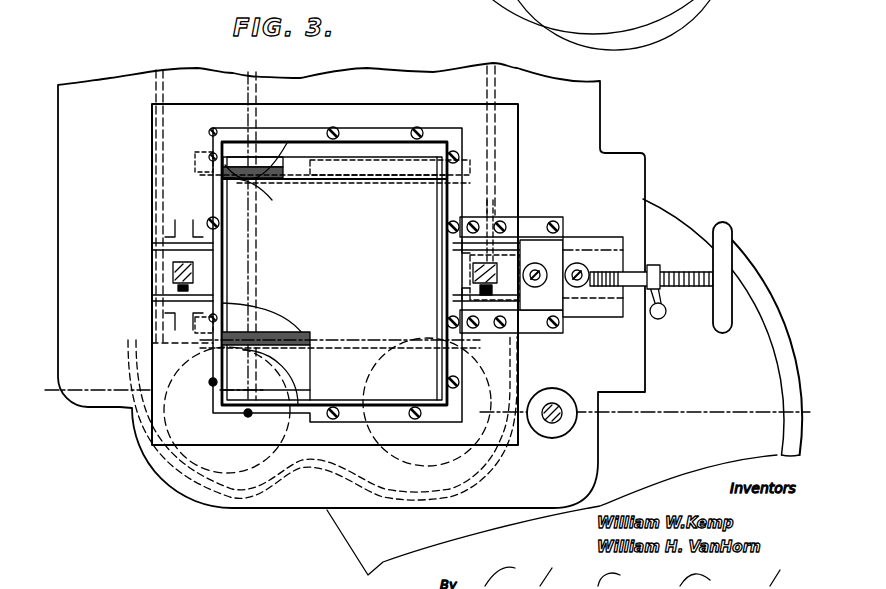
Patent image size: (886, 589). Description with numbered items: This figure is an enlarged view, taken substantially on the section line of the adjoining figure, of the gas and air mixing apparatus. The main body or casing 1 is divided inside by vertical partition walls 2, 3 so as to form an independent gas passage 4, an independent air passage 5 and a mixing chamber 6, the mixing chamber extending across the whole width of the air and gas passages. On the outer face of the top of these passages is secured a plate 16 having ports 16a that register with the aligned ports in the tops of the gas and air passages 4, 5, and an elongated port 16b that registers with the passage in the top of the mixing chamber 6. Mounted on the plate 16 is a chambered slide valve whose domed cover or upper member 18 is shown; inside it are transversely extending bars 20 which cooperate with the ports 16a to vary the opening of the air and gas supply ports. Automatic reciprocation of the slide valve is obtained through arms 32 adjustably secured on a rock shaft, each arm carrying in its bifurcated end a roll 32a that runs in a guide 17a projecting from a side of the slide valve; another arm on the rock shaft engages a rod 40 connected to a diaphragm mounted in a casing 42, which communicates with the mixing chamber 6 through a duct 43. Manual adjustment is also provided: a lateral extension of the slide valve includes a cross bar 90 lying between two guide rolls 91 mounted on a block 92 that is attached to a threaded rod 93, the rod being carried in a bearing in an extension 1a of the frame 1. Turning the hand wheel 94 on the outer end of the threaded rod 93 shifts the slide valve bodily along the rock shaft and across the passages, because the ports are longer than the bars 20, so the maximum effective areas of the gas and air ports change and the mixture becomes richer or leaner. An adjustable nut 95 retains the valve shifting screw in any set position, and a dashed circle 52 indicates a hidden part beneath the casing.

The main body or casing 1 is at (97, 90).
The extension 1a is at (632, 318).
The vertical partition wall 2 is at (266, 83).
The vertical partition wall 3 is at (348, 341).
The gas passage 4 is at (191, 80).
The air passage 5 is at (403, 82).
The mixing chamber 6 is at (525, 0).
The plate 16 is at (262, 147).
The ports of the plate 16a is at (265, 180).
The elongated port 16b is at (300, 373).
The guides 17a is at (157, 249).
The domed cover or upper member 18 is at (377, 157).
The transversely extending bars 20 is at (285, 168).
The arms 32 is at (171, 272).
The roll 32a is at (176, 290).
The rod 40 is at (557, 399).
The casing 42 is at (752, 332).
The duct 43 is at (428, 466).
The hidden knob 52 is at (228, 462).
The cross bar 90 is at (557, 253).
The guide rolls 91 is at (540, 285).
The block 92 is at (584, 262).
The threaded rod 93 is at (690, 287).
The hand wheel 94 is at (730, 236).
The adjustable nut 95 is at (656, 267).